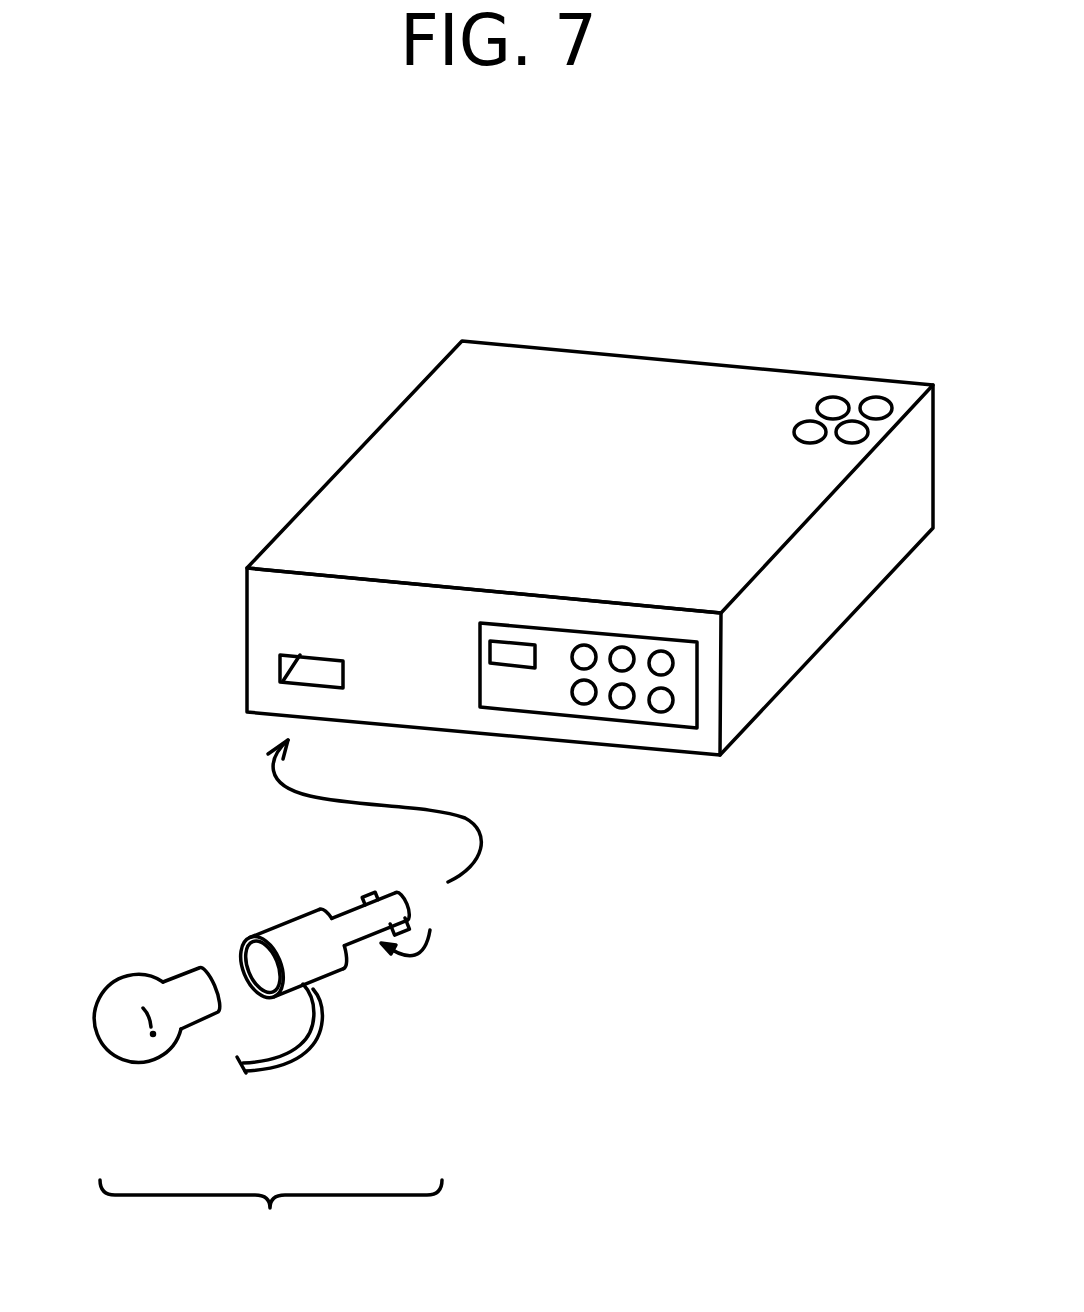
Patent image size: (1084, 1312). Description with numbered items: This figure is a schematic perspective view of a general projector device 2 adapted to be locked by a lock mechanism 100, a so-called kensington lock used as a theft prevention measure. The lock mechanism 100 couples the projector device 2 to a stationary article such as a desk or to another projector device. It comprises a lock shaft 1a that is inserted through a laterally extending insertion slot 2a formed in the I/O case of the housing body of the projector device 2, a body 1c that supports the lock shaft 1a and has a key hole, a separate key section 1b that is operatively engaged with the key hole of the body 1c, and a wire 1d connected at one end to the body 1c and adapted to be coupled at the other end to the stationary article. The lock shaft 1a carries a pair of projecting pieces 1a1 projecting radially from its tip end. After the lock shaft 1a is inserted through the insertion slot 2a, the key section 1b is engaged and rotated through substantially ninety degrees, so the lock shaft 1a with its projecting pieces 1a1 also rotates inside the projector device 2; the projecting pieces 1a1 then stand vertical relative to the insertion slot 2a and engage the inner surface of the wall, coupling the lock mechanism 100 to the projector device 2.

The projector device 2 is at (818, 630).
The insertion slot 2a is at (298, 682).
The lock mechanism 100 is at (268, 1041).
The lock shaft 1a is at (357, 943).
The projecting pieces 1a1 is at (413, 927).
The key section 1b is at (177, 978).
The body 1c is at (272, 928).
The wire 1d is at (273, 1050).